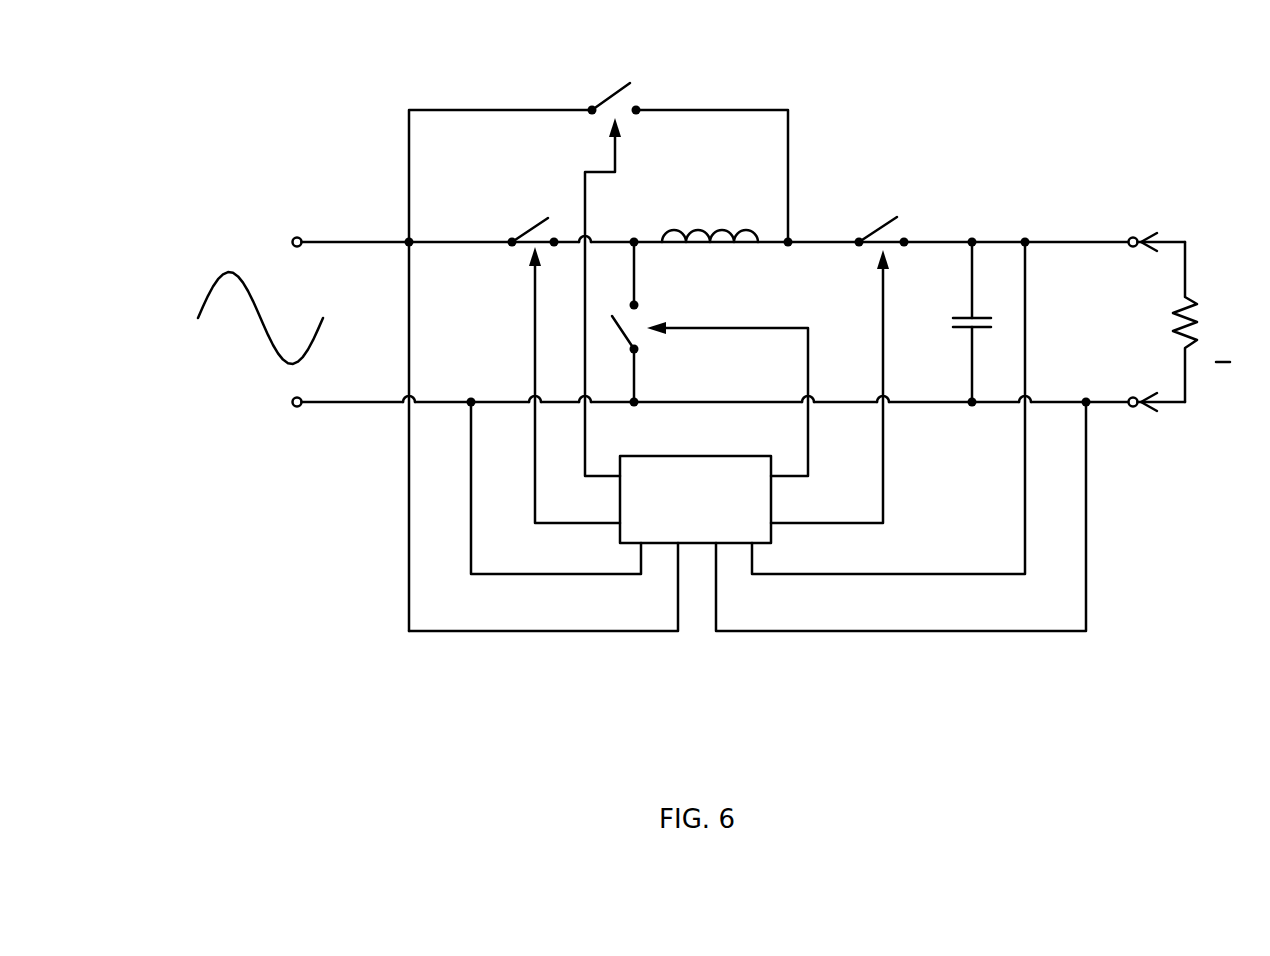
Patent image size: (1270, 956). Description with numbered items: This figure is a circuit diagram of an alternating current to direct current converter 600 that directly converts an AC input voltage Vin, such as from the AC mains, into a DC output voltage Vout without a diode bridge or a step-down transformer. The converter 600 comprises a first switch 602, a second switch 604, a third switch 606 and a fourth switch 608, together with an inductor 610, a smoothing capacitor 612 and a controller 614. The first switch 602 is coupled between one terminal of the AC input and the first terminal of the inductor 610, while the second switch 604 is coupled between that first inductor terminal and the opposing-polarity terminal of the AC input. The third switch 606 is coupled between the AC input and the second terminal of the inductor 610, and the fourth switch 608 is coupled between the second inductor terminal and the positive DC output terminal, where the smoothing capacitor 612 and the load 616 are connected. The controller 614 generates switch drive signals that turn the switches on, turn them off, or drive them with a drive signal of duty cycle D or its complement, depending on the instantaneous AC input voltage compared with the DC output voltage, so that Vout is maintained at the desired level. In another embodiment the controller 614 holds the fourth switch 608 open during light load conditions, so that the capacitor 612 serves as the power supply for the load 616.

The AC/DC converter 600 is at (240, 590).
The first switch 602 is at (564, 354).
The second switch 604 is at (710, 359).
The third switch 606 is at (613, 263).
The fourth switch 608 is at (840, 351).
The inductor 610 is at (710, 218).
The smoothing capacitor 612 is at (946, 322).
The controller 614 is at (747, 436).
The load 616 is at (1158, 322).